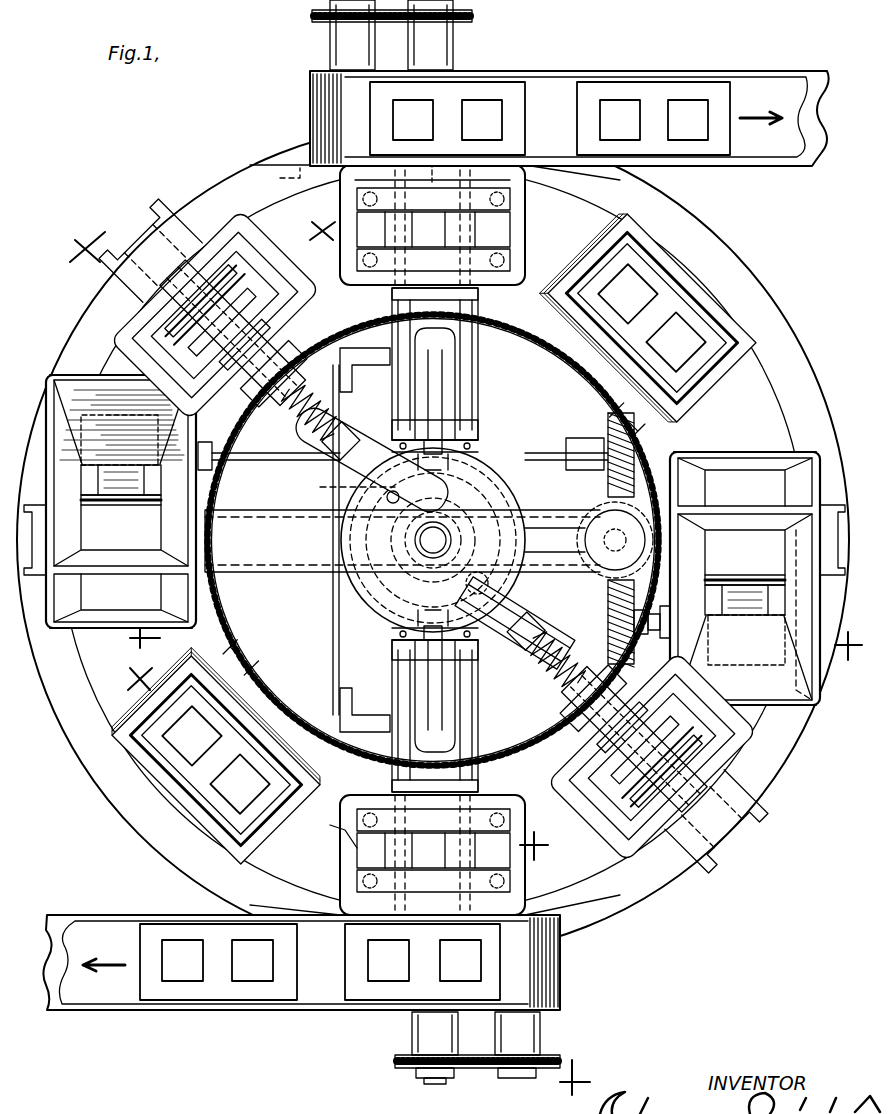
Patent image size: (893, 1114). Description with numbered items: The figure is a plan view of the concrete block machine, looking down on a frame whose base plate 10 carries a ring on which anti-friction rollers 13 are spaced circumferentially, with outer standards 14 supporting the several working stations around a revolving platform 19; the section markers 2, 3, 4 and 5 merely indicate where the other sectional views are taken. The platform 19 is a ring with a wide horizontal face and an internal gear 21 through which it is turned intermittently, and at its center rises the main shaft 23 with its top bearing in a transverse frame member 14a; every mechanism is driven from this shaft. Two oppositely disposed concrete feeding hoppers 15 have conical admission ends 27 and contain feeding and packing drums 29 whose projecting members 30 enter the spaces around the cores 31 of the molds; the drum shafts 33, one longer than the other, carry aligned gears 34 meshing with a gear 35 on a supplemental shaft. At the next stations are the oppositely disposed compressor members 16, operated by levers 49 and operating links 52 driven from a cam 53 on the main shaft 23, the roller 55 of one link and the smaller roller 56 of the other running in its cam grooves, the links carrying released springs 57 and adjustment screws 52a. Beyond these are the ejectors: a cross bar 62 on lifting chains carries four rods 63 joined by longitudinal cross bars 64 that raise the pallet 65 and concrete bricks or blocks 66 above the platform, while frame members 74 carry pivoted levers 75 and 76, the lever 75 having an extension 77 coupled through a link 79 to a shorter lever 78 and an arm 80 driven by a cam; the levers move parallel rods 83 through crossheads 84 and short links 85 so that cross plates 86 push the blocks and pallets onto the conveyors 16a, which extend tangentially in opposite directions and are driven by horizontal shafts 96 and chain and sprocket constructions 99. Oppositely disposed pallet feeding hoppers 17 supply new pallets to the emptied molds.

The section line 2 is at (466, 443).
The section line 3 is at (567, 1078).
The section line 4 is at (232, 426).
The section line 5 is at (338, 767).
The base plate 10 is at (218, 172).
The anti-friction rollers 13 is at (446, 151).
The standards 14 is at (160, 235).
The transverse frame member 14a is at (402, 541).
The concrete feeding hoppers 15 is at (48, 375).
The compressor member 16 is at (195, 260).
The conveyors 16a is at (540, 80).
The pallet feeding hoppers 17 is at (115, 735).
The revolving platform 19 is at (266, 205).
The internal gear 21 is at (575, 370).
The main shaft 23 is at (433, 540).
The admission ends 27 is at (46, 385).
The concrete feeding and packing drums 29 is at (748, 615).
The projecting members 30 is at (150, 506).
The cores 31 is at (433, 540).
The shafts 33 is at (250, 460).
The gears 34 is at (608, 420).
The gear 35 is at (600, 495).
The levers 49 is at (165, 290).
The operating links 52 is at (300, 350).
The adjustment screws 52a is at (340, 425).
The cam 53 is at (485, 485).
The roller 55 is at (344, 486).
The smaller roller 56 is at (520, 540).
The released springs 57 is at (290, 415).
The cross bar 62 is at (510, 200).
The rods 63 is at (357, 872).
The longitudinal cross bars 64 is at (332, 830).
The pallet 65 is at (434, 539).
The concrete bricks or blocks 66 is at (590, 98).
The frame members 74 is at (478, 304).
The lever 75 is at (392, 680).
The lever 76 is at (470, 375).
The extension 77 is at (340, 700).
The shorter lever 78 is at (349, 370).
The link 79 is at (333, 670).
The arm 80 is at (410, 612).
The parallel rods 83 is at (462, 308).
The transverse crossheads 84 is at (478, 440).
The short links 85 is at (448, 432).
The cross plates 86 is at (510, 262).
The horizontal shafts 96 is at (428, 1082).
The chain and sprocket constructions 99 is at (312, 16).